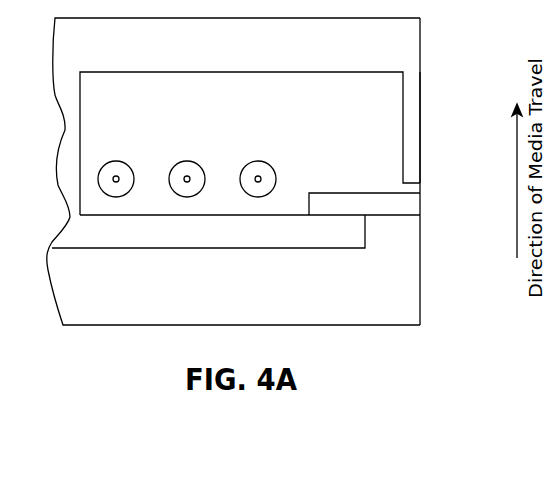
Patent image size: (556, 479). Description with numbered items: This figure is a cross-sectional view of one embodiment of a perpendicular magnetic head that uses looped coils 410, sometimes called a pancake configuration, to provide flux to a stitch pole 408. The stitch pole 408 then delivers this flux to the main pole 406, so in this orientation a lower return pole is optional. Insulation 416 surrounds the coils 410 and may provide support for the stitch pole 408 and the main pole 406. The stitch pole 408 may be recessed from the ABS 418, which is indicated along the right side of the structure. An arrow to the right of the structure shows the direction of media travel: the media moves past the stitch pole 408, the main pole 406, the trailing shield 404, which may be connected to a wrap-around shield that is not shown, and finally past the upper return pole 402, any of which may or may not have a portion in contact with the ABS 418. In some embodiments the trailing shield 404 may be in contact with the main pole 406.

The upper return pole 402 is at (325, 56).
The trailing shield 404 is at (421, 107).
The main pole 406 is at (421, 200).
The stitch pole 408 is at (268, 246).
The looped coils 410 is at (109, 162).
The insulation 416 is at (365, 154).
The ABS 418 is at (421, 35).